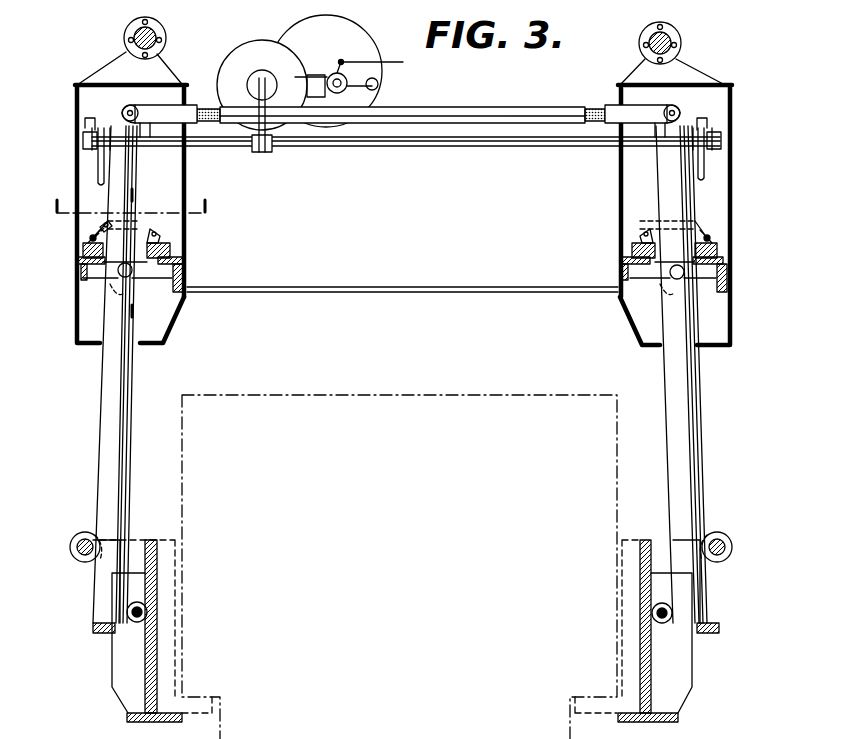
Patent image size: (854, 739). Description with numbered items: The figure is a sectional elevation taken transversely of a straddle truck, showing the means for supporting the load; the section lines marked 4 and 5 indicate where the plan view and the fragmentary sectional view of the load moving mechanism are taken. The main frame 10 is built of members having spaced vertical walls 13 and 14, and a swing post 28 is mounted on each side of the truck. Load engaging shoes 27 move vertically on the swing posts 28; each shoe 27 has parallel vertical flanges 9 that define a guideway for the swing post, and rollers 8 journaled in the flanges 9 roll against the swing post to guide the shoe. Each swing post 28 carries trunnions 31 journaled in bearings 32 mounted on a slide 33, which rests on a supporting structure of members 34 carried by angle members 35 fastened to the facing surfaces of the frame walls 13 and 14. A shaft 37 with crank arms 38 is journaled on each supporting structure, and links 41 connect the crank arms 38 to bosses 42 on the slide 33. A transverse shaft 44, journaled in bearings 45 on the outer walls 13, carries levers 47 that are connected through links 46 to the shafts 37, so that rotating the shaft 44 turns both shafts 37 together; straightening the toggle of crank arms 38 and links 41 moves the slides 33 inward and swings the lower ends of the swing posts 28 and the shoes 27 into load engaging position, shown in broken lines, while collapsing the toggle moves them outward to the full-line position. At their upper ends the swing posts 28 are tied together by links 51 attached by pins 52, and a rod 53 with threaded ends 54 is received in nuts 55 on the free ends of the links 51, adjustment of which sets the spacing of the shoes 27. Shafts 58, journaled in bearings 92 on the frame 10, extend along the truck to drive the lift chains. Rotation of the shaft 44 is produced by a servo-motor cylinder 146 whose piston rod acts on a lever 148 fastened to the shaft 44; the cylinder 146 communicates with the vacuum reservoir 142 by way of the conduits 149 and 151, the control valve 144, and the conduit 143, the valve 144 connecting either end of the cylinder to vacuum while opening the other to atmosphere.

The rollers 8 is at (70, 547).
The vertical flanges 9 is at (122, 668).
The main frame 10 is at (735, 88).
The vertical wall 13 is at (76, 103).
The vertical wall 14 is at (187, 168).
The load engaging shoes 27 is at (130, 716).
The swing posts 28 is at (104, 408).
The trunnions 31 is at (118, 270).
The bearings 32 is at (85, 292).
The slide 33 is at (170, 250).
The members 34 is at (184, 260).
The angle members 35 is at (185, 276).
The shaft 37 is at (92, 236).
The crank arms 38 is at (100, 226).
The links 41 is at (150, 230).
The bosses 42 is at (160, 235).
The shaft 44 is at (548, 148).
The bearings 45 is at (88, 141).
The links 46 is at (98, 176).
The levers 47 is at (88, 118).
The link 51 is at (188, 105).
The pin 52 is at (127, 108).
The rod 53 is at (498, 94).
The threaded ends 54 is at (590, 108).
The nuts 55 is at (600, 127).
The shafts 58 is at (125, 34).
The bearings 92 is at (176, 60).
The vacuum reservoir 142 is at (372, 40).
The conduit 143 is at (378, 90).
The control valve 144 is at (383, 72).
The cylinder 146 is at (250, 48).
The lever 148 is at (268, 152).
The conduit 149 is at (325, 75).
The conduit 151 is at (310, 75).
The section line 4- 4 is at (132, 199).
The section line 5- 5 is at (134, 193).